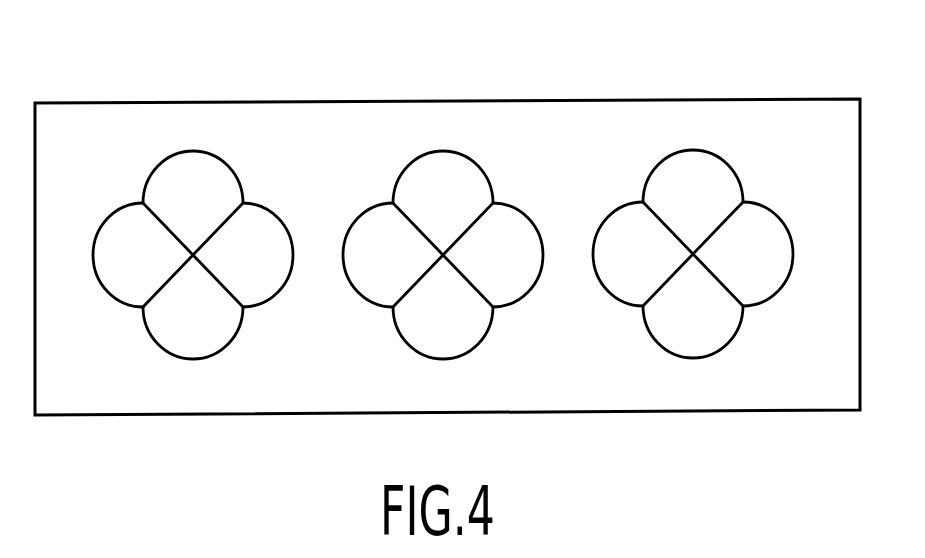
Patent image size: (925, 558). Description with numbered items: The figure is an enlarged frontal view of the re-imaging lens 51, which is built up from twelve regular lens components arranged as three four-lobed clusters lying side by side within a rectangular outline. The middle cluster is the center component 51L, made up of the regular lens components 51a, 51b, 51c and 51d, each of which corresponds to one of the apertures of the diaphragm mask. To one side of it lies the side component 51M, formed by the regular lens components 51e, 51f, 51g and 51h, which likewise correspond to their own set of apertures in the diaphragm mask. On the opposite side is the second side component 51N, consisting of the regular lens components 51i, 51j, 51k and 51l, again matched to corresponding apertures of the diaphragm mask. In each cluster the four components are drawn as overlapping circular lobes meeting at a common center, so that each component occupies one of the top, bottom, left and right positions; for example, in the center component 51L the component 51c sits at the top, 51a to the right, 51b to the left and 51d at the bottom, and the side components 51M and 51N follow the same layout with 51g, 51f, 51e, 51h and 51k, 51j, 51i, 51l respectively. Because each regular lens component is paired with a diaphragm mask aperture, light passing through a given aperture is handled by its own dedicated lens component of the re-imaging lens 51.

The re-imaging lens 51 is at (661, 451).
The side component 51M is at (297, 80).
The center component 51L is at (542, 80).
The side component 51N is at (795, 80).
The regular lens component 51a is at (535, 228).
The regular lens component 51b is at (342, 263).
The regular lens component 51c is at (402, 170).
The regular lens component 51d is at (401, 342).
The regular lens component 51e is at (92, 263).
The regular lens component 51f is at (285, 228).
The regular lens component 51g is at (152, 170).
The regular lens component 51h is at (151, 342).
The regular lens component 51i is at (592, 263).
The regular lens component 51j is at (785, 228).
The regular lens component 51k is at (652, 170).
The regular lens component 51l is at (651, 342).